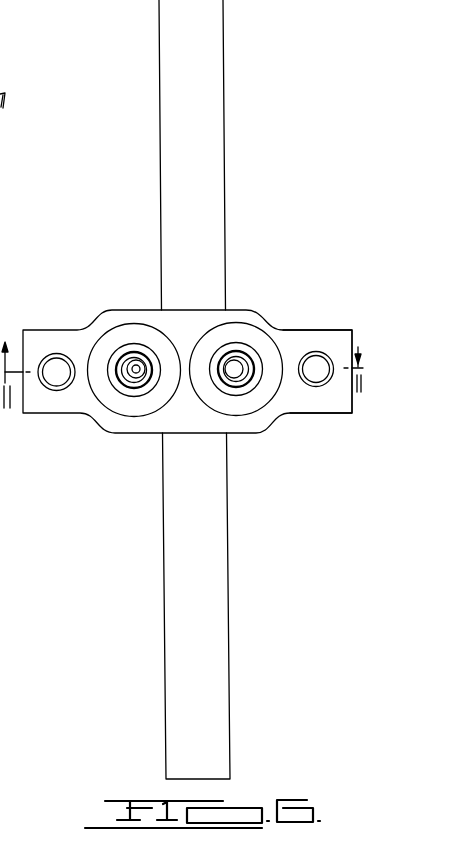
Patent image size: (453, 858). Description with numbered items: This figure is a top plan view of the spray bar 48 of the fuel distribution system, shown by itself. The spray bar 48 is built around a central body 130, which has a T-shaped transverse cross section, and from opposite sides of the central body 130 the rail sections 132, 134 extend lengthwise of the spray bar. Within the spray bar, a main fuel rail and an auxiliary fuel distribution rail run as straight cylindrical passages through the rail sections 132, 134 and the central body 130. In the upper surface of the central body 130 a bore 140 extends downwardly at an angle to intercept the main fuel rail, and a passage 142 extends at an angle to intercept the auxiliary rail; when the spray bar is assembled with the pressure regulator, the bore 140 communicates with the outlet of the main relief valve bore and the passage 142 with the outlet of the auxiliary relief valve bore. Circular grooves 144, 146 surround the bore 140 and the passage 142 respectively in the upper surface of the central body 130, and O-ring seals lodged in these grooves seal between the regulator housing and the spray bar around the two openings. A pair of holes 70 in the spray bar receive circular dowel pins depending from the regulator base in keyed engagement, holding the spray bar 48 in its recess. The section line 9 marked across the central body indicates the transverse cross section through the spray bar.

The section line 9- 9 is at (348, 350).
The spray bar 48 is at (265, 239).
The holes 70 is at (63, 358).
The central body 130 is at (255, 431).
The rail section 132 is at (220, 127).
The rail section 134 is at (230, 597).
The bore 140 is at (139, 378).
The passage 142 is at (235, 364).
The circular groove 144 is at (124, 333).
The circular groove 146 is at (270, 393).